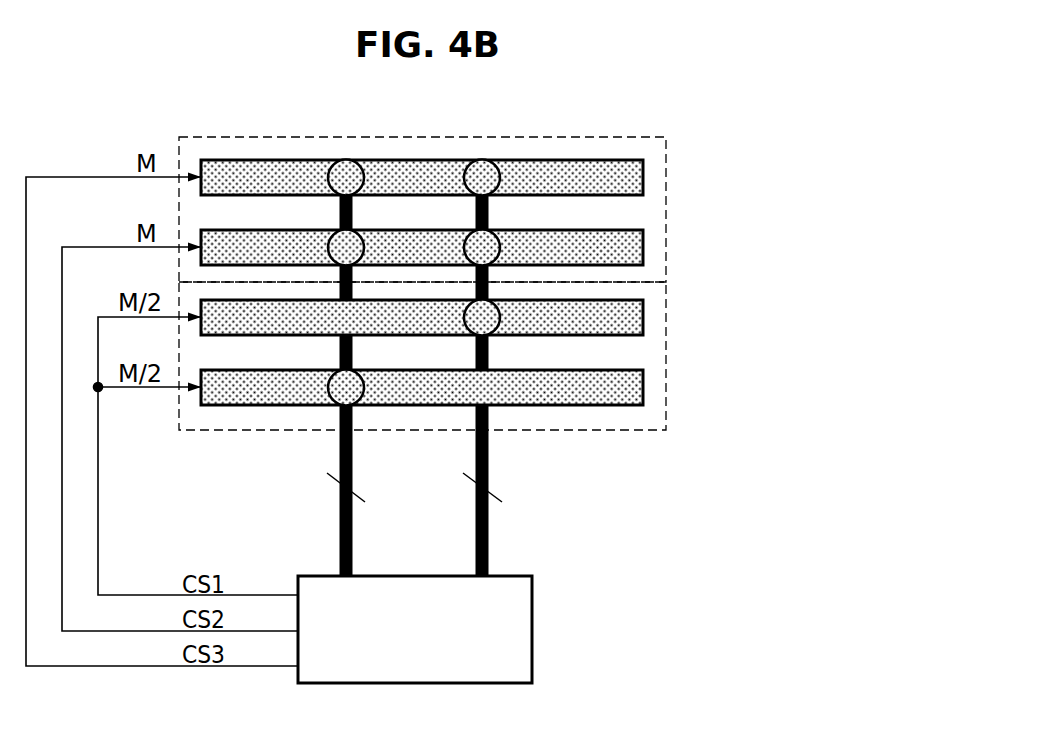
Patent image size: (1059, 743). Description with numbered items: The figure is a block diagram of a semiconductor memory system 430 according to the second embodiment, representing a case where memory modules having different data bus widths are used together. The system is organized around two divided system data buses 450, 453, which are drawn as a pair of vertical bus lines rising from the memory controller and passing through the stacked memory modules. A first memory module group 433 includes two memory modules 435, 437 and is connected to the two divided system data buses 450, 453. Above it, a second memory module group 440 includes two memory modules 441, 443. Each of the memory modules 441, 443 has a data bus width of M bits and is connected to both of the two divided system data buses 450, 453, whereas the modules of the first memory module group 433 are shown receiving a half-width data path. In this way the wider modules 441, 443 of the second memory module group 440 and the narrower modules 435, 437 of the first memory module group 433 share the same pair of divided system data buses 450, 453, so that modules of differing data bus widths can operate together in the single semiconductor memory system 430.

The semiconductor memory system 430 is at (461, 371).
The second memory module group 440 is at (418, 137).
The first memory module group 433 is at (630, 431).
The memory module 441 is at (644, 180).
The memory module 443 is at (644, 249).
The memory module 437 is at (644, 319).
The memory module 435 is at (644, 389).
The divided system data bus 450 is at (340, 545).
The divided system data bus 453 is at (489, 540).